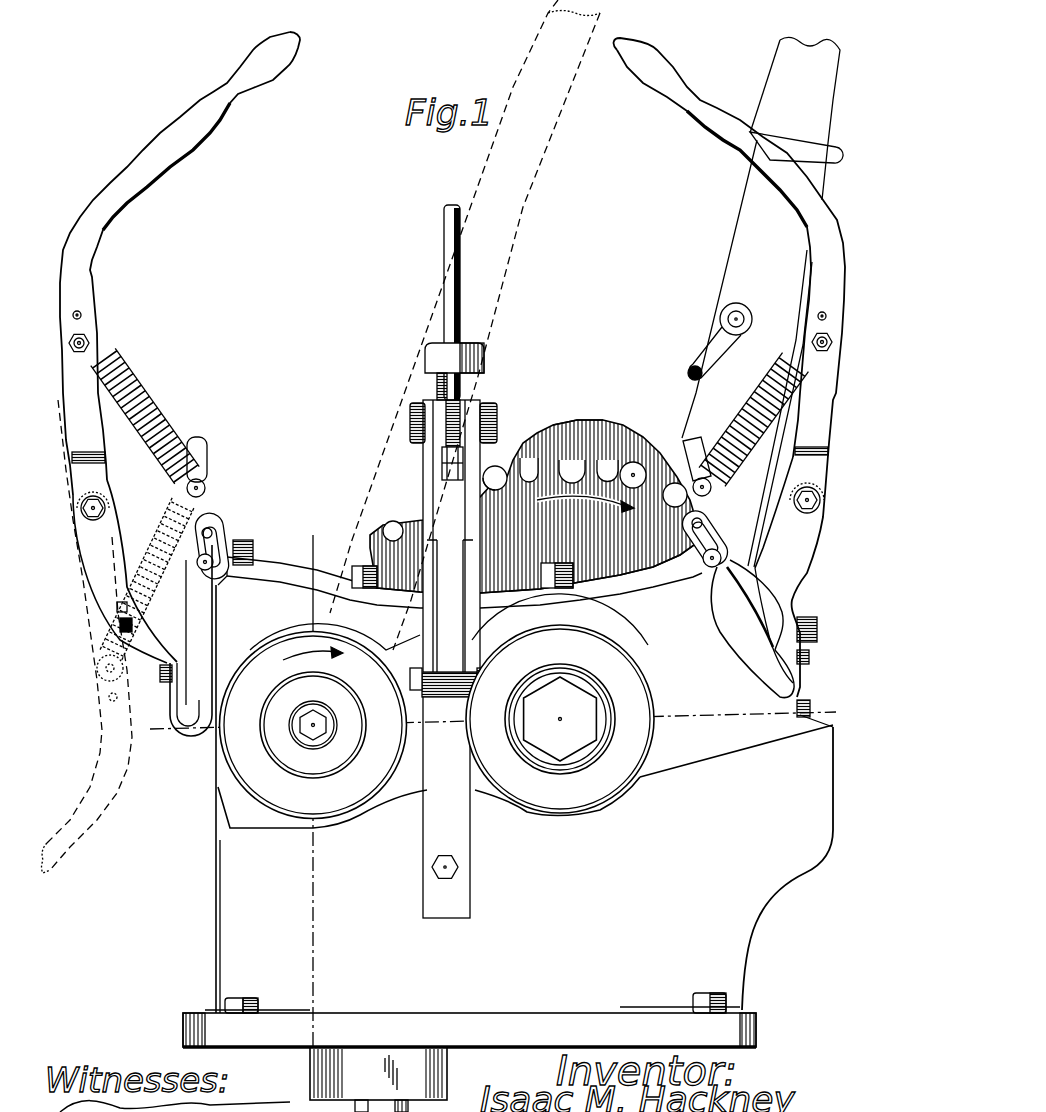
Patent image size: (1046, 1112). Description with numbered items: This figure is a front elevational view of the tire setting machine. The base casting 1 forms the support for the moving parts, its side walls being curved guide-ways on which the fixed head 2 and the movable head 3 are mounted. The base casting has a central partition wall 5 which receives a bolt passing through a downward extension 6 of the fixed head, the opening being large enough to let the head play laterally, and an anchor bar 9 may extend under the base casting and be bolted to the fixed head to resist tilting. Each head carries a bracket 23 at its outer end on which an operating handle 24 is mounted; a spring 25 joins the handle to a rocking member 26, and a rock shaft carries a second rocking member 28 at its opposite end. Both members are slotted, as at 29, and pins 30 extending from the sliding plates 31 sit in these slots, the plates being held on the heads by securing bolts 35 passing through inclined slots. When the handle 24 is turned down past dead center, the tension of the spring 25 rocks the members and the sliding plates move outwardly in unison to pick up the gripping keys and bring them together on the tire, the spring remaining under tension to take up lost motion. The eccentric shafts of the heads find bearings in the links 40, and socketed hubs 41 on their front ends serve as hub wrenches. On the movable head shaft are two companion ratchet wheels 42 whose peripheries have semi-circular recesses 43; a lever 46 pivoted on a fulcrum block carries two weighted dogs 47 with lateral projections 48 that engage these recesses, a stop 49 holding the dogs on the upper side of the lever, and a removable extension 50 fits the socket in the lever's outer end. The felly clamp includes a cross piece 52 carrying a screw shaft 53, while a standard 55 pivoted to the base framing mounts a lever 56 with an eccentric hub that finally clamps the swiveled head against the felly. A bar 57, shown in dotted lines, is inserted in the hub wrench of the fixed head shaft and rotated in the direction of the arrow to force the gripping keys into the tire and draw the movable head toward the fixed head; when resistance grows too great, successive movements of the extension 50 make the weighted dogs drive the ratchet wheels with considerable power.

The base casting 1 is at (508, 881).
The fixed head 2 is at (432, 799).
The movable head 3 is at (744, 625).
The central partition wall 5 is at (487, 720).
The downward extension 6 is at (309, 777).
The anchor bar 9 is at (378, 1079).
The bracket 23 is at (93, 545).
The operating handle 24 is at (80, 282).
The spring 25 is at (218, 377).
The rocking member 26 is at (206, 452).
The rocking member 28 is at (202, 690).
The slot 29 is at (212, 530).
The pin 30 is at (208, 567).
The sliding plate 31 is at (460, 576).
The securing bolt 35 is at (352, 577).
The link 40 is at (399, 786).
The socketed hub 41 is at (437, 733).
The companion ratchet wheel 42 is at (532, 506).
The semi-circular recess 43 is at (497, 478).
The lever 46 is at (745, 233).
The weighted dog 47 is at (575, 430).
The lateral projection 48 is at (630, 447).
The stop 49 is at (690, 360).
The removable extension 50 is at (796, 118).
The cross piece 52 is at (440, 463).
The screw shaft 53 is at (470, 388).
The standard 55 is at (453, 659).
The lever 56 is at (450, 250).
The bar 57 is at (497, 158).